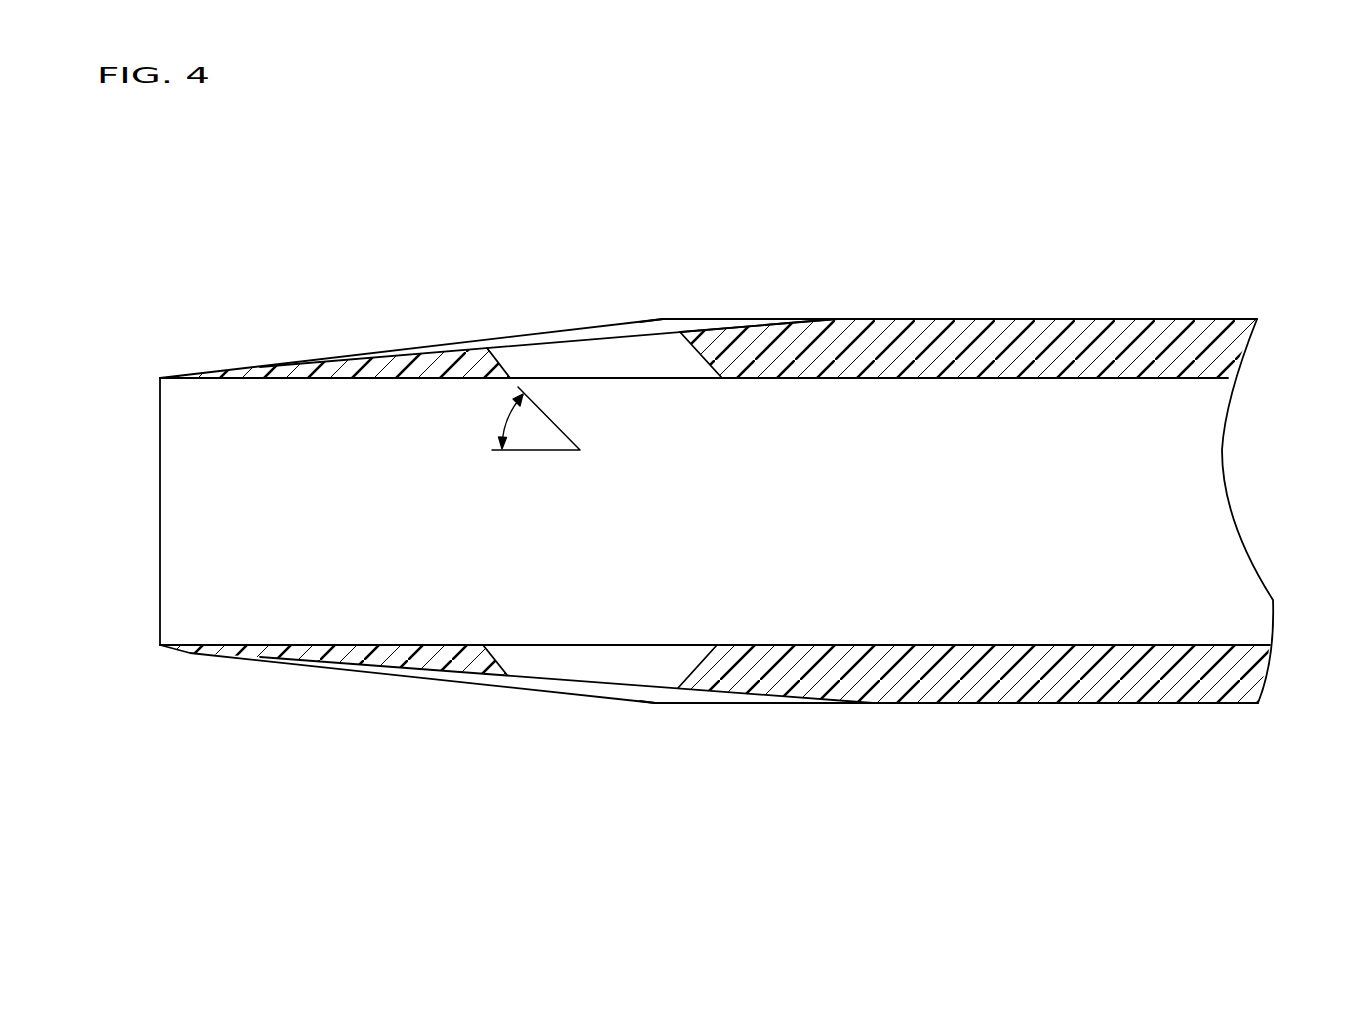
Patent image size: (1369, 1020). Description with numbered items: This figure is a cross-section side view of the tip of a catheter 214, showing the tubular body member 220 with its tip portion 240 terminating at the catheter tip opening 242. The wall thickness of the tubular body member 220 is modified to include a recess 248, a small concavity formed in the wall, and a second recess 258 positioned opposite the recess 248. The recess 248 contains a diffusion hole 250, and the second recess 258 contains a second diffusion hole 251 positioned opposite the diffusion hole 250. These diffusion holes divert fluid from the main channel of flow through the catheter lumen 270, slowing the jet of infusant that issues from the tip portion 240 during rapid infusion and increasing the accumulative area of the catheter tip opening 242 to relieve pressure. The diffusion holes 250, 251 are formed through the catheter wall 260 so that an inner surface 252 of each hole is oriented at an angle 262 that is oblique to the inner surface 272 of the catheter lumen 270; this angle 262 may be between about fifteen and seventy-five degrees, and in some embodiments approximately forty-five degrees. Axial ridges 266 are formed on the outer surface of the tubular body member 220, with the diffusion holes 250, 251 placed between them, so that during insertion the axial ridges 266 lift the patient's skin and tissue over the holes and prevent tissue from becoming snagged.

The catheter 214 is at (1050, 194).
The tubular body member 220 is at (1148, 319).
The tip portion 240 is at (400, 678).
The catheter tip opening 242 is at (160, 607).
The recess 248 is at (760, 319).
The diffusion hole 250 is at (563, 350).
The second diffusion hole 251 is at (525, 665).
The inner surface of hole 252 is at (515, 343).
The second recess 258 is at (718, 698).
The catheter wall 260 is at (1005, 319).
The angle 262 is at (507, 437).
The axial ridges 266 is at (663, 319).
The catheter lumen 270 is at (1173, 473).
The inner surface of catheter lumen 272 is at (258, 378).